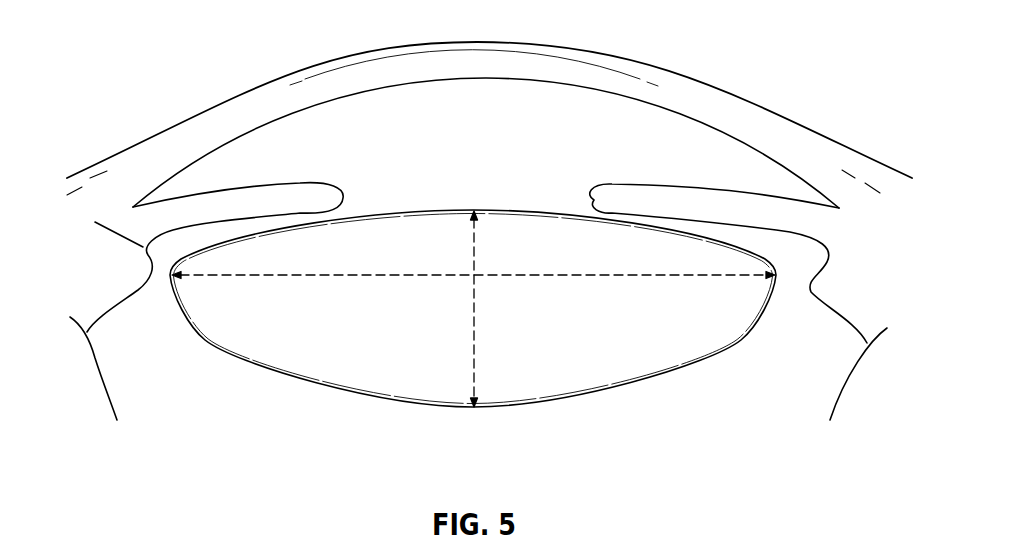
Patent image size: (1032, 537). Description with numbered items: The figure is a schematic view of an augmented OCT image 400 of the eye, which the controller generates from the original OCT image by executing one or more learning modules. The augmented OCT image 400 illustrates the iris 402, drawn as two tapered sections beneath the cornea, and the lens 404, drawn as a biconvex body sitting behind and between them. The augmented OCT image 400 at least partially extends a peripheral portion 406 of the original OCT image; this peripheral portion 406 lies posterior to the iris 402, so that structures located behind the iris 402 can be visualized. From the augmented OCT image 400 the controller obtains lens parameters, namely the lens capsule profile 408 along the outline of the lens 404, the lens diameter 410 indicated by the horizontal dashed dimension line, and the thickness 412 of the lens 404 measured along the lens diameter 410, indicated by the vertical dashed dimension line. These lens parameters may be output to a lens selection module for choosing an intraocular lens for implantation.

The augmented OCT image 400 is at (107, 25).
The iris 402 is at (288, 178).
The lens 404 is at (406, 414).
The peripheral portion 406 is at (206, 343).
The lens capsule profile 408 is at (646, 382).
The lens diameter 410 is at (293, 277).
The thickness 412 is at (476, 350).